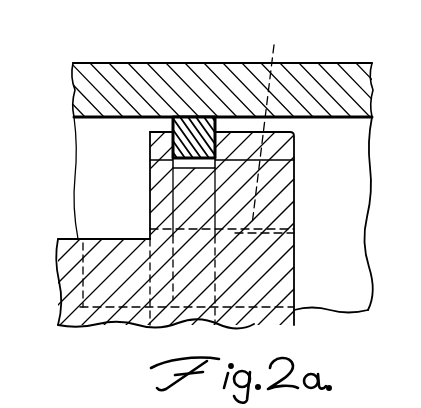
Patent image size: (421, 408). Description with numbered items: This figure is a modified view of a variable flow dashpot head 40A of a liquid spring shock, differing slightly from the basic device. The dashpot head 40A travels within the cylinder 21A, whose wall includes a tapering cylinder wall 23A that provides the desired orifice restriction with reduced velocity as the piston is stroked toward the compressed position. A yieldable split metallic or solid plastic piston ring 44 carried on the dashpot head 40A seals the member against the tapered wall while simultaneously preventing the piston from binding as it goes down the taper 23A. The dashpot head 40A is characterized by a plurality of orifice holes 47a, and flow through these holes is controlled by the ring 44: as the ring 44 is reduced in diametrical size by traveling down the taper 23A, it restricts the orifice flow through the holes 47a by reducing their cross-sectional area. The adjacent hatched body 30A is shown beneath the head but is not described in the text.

The cylinder 21A is at (320, 63).
The tapering cylinder wall 23A is at (337, 118).
The base block 30A is at (105, 239).
The dashpot head 40A is at (295, 172).
The piston ring 44 is at (193, 120).
The orifice holes 47a is at (252, 125).